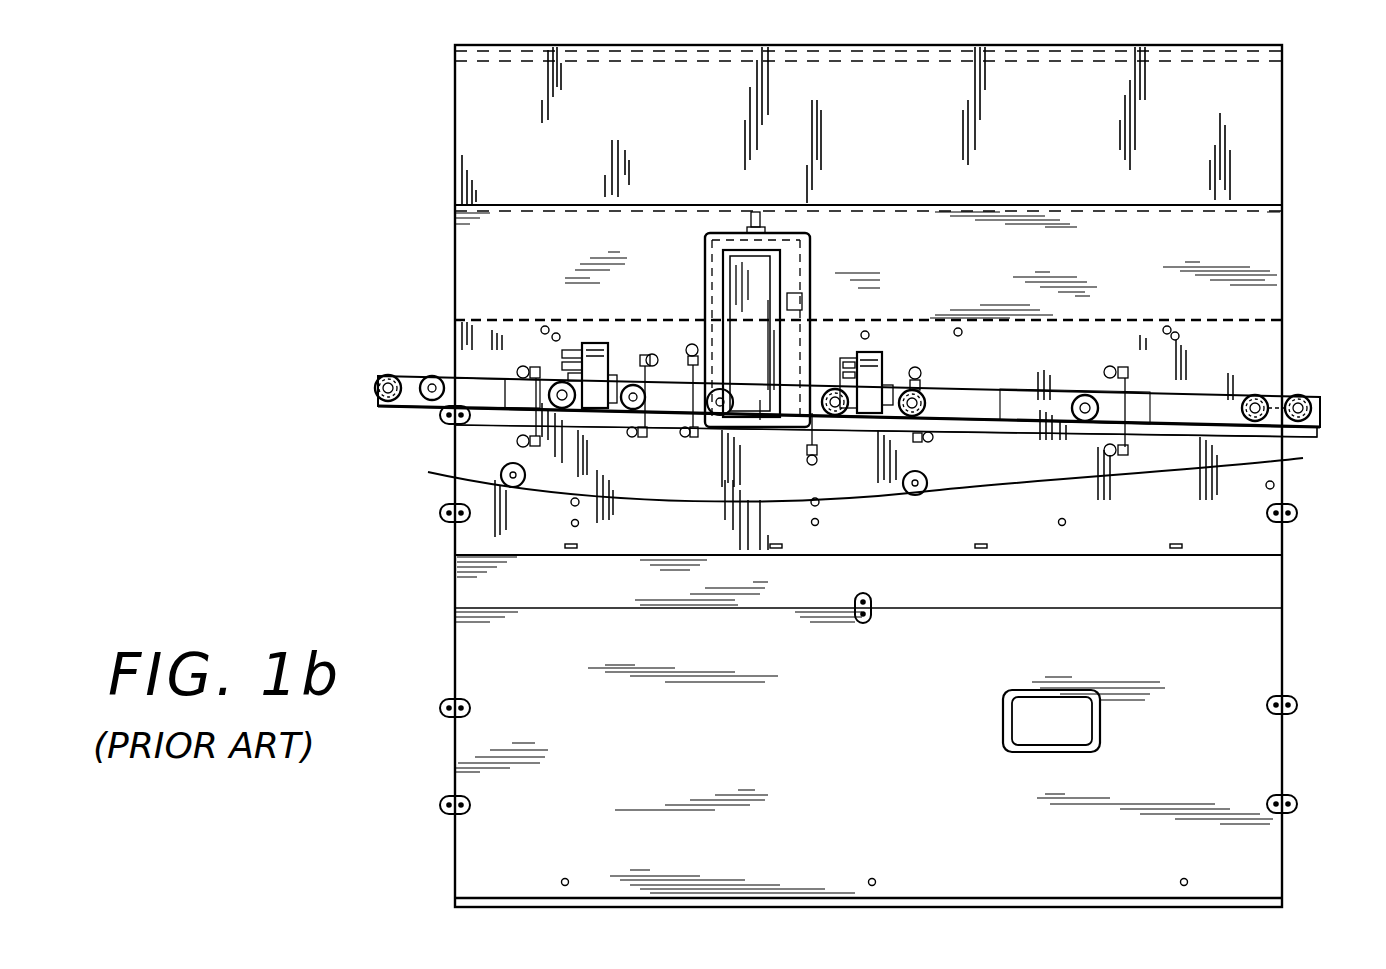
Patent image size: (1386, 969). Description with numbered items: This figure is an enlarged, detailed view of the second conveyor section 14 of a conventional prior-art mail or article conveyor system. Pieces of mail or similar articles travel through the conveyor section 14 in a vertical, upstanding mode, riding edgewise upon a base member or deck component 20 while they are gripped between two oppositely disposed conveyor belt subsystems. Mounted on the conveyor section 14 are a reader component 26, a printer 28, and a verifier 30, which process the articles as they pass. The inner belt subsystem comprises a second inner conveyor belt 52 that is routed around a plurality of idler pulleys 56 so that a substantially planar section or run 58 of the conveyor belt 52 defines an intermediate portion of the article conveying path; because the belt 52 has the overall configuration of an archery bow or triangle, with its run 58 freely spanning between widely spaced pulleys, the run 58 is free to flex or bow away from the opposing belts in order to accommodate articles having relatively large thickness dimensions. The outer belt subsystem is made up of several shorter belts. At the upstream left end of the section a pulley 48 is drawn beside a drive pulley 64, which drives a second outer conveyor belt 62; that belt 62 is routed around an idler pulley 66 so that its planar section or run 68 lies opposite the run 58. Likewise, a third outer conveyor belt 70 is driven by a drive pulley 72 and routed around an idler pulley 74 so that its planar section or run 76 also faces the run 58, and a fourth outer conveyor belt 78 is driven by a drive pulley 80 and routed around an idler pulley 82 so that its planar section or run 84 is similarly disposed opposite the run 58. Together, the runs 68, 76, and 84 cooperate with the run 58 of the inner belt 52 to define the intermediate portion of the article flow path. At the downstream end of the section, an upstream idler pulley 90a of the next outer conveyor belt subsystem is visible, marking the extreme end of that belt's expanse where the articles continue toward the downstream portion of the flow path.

The conveyor section 14 is at (1255, 750).
The base member or deck component 20 is at (755, 725).
The reader component 26 is at (597, 343).
The printer 28 is at (812, 250).
The verifier 30 is at (893, 347).
The pulley 48 is at (432, 375).
The second inner conveyor belt 52 is at (645, 495).
The idler pulleys 56 is at (513, 490).
The planar section or run 58 is at (487, 410).
The second outer conveyor belt 62 is at (473, 373).
The drive pulley 64 is at (380, 375).
The idler pulley 66 is at (562, 410).
The planar section or run 68 is at (507, 407).
The third outer conveyor belt 70 is at (672, 360).
The drive pulley 72 is at (838, 418).
The idler pulley 74 is at (628, 408).
The planar section or run 76 is at (693, 395).
The fourth outer conveyor belt 78 is at (1035, 392).
The drive pulley 80 is at (937, 390).
The idler pulley 82 is at (1257, 397).
The planar section or run 84 is at (1143, 408).
The upstream idler pulley 90a is at (1310, 397).